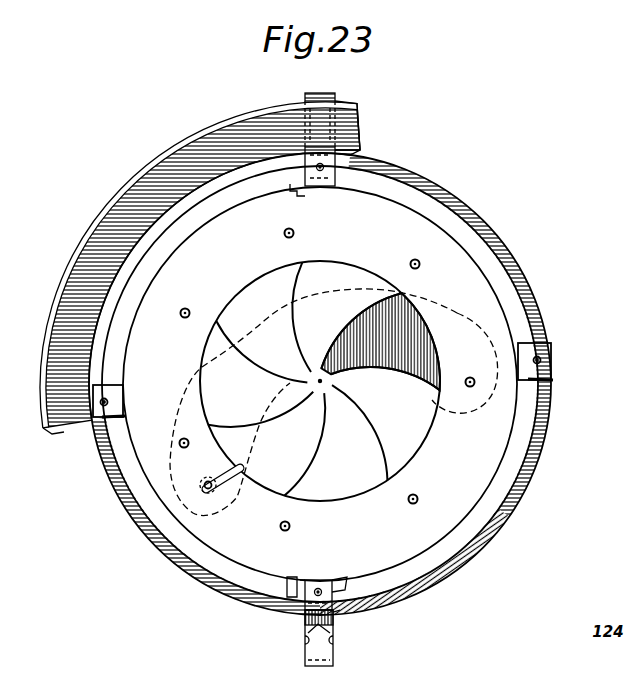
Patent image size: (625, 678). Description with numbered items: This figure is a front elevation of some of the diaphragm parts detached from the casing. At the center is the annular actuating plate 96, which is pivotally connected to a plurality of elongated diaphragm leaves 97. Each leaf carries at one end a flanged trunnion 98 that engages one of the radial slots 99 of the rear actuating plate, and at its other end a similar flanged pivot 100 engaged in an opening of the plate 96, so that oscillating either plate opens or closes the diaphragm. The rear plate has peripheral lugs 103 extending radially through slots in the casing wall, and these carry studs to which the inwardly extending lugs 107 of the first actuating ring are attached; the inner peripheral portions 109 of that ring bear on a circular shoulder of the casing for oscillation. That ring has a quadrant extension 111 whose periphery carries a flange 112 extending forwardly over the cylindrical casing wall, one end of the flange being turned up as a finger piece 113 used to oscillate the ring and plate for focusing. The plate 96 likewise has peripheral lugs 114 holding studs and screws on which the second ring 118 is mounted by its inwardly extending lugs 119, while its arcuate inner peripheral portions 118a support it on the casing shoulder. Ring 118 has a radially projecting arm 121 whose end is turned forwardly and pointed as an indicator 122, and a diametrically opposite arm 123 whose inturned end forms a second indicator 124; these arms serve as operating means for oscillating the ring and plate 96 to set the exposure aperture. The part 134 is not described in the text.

The annular plate 96 is at (452, 243).
The diaphragm leaves 97 is at (403, 358).
The flanged trunnion 98 is at (208, 480).
The radial slots 99 is at (241, 490).
The flanged pivot 100 is at (420, 266).
The peripheral lugs 103 is at (551, 350).
The inwardly extending lugs 107 is at (550, 383).
The inner peripheral portions 109 is at (503, 284).
The quadrant extension 111 is at (88, 263).
The flange 112 is at (59, 290).
The finger piece 113 is at (59, 433).
The peripheral lugs 114 is at (361, 150).
The ring 118 is at (270, 160).
The inner peripheral portions 118a is at (320, 580).
The inwardly extending lugs 119 is at (346, 582).
The radially projecting arm 121 is at (362, 126).
The indicator 122 is at (324, 93).
The arm 123 is at (335, 640).
The indicator 124 is at (305, 632).
The notch 134 is at (305, 190).